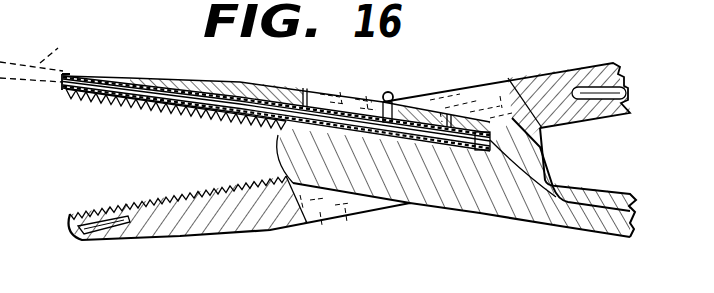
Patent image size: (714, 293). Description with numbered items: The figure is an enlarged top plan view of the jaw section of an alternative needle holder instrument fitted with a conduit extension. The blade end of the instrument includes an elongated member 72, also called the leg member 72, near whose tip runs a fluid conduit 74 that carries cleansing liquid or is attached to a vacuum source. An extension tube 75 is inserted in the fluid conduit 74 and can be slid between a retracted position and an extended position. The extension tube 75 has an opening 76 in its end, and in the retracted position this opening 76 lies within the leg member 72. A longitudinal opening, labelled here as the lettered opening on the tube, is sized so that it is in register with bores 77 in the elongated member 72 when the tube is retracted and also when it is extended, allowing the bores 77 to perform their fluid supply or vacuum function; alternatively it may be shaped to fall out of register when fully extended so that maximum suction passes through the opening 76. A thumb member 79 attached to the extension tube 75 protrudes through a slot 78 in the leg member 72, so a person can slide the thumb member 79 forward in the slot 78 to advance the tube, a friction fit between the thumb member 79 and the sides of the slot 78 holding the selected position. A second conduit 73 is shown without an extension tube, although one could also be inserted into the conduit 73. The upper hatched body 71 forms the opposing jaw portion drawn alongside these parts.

The upper jaw body 71 is at (546, 82).
The elongated member 72 is at (476, 212).
The conduit 73 is at (624, 86).
The fluid conduit 74 is at (591, 213).
The extension tube 75 is at (78, 74).
The opening 76 is at (65, 81).
The bores 77 is at (268, 68).
The slot 78 is at (357, 98).
The thumb member 79 is at (330, 88).